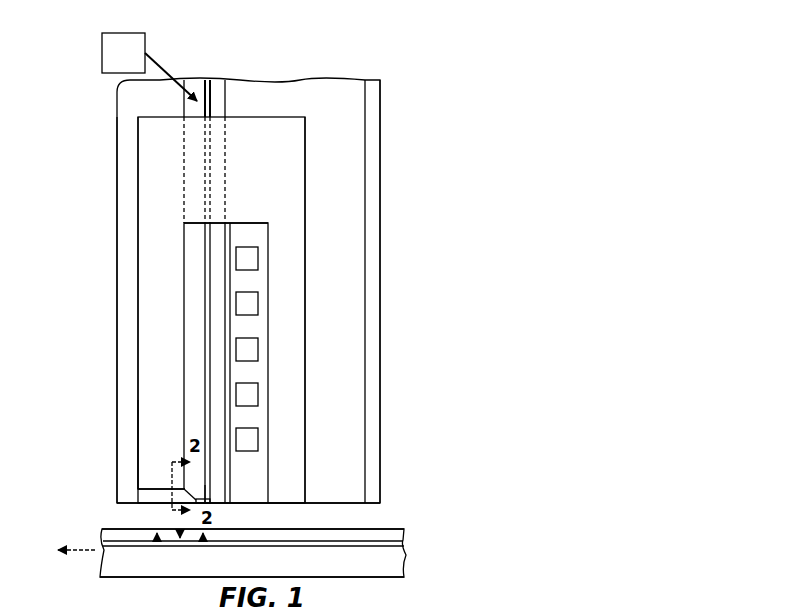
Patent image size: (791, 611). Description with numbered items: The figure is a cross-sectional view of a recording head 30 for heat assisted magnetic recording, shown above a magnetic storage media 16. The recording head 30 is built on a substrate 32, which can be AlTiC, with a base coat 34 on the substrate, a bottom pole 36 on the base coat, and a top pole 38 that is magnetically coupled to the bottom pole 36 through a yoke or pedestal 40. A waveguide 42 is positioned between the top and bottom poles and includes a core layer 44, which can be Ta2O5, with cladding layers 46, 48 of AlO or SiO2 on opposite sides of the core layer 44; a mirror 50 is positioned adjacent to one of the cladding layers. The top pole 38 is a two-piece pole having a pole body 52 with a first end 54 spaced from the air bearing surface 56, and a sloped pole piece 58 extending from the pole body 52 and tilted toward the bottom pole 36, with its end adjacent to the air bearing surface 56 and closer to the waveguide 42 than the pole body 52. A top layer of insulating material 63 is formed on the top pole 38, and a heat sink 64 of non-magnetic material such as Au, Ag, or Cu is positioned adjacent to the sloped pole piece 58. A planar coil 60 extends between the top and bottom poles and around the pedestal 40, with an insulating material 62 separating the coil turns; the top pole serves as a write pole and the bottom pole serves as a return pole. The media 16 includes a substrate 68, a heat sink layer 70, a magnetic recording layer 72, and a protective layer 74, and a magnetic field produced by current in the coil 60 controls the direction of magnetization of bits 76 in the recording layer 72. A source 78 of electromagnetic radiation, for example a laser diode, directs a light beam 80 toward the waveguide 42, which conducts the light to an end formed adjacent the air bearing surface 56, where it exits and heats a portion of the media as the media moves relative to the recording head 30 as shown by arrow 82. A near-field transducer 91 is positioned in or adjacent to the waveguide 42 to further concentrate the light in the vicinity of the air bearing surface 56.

The magnetic storage media 16 is at (410, 508).
The recording head 30 is at (90, 121).
The substrate 32 is at (373, 92).
The base coat 34 is at (334, 93).
The bottom pole 36 is at (297, 324).
The top pole 38 is at (145, 352).
The pedestal 40 is at (258, 104).
The waveguide 42 is at (228, 76).
The core layer 44 is at (206, 277).
The cladding layer 46 is at (191, 313).
The cladding layer 48 is at (215, 247).
The mirror 50 is at (228, 222).
The pole body 52 is at (145, 420).
The first end 54 is at (152, 490).
The air bearing surface 56 is at (258, 504).
The sloped pole piece 58 is at (187, 493).
The planar coil 60 is at (260, 352).
The insulating material 62 is at (264, 481).
The top layer of insulating material 63 is at (128, 178).
The heat sink 64 is at (205, 496).
The substrate 68 is at (378, 568).
The heat sink layer 70 is at (405, 547).
The magnetic recording layer 72 is at (404, 539).
The protective layer 74 is at (393, 527).
The bits 76 is at (153, 539).
The source of electromagnetic radiation 78 is at (100, 52).
The light beam 80 is at (180, 75).
The arrow 82 is at (84, 556).
The near-field transducer 91 is at (216, 498).